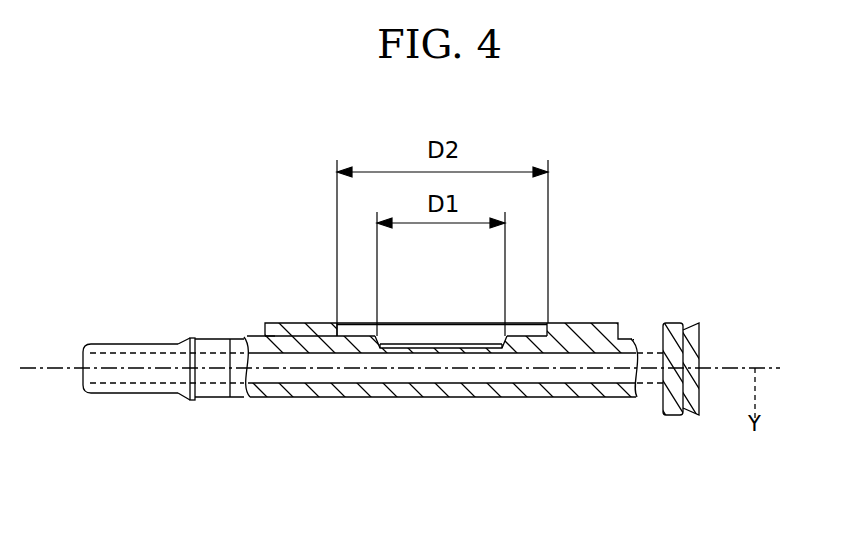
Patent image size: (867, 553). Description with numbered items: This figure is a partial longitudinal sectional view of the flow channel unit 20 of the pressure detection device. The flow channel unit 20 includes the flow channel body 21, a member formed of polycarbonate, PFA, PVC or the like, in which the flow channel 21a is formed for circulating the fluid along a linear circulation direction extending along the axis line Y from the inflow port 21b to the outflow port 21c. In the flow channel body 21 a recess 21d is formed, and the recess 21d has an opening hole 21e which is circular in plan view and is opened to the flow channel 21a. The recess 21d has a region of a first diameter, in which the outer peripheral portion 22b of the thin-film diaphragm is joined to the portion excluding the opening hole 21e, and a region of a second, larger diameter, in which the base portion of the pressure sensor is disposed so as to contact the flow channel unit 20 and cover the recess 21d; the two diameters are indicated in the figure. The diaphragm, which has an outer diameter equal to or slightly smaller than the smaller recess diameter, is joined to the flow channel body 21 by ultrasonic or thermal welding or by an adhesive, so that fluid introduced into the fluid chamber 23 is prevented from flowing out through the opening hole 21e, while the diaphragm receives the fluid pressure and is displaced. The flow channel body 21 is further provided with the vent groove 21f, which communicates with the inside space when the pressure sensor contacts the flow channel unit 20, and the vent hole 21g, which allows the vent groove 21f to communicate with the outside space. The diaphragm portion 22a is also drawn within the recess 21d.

The flow channel unit 20 is at (666, 276).
The flow channel body 21 is at (586, 323).
The flow channel 21a is at (603, 392).
The inflow port 21b is at (700, 342).
The outflow port 21c is at (84, 357).
The recess 21d is at (413, 314).
The opening hole 21e is at (470, 367).
The vent groove 21f is at (355, 335).
The vent hole 21g is at (262, 336).
The first film portion 22a is at (455, 349).
The outer peripheral portion 22b is at (397, 354).
The fluid chamber 23 is at (427, 372).